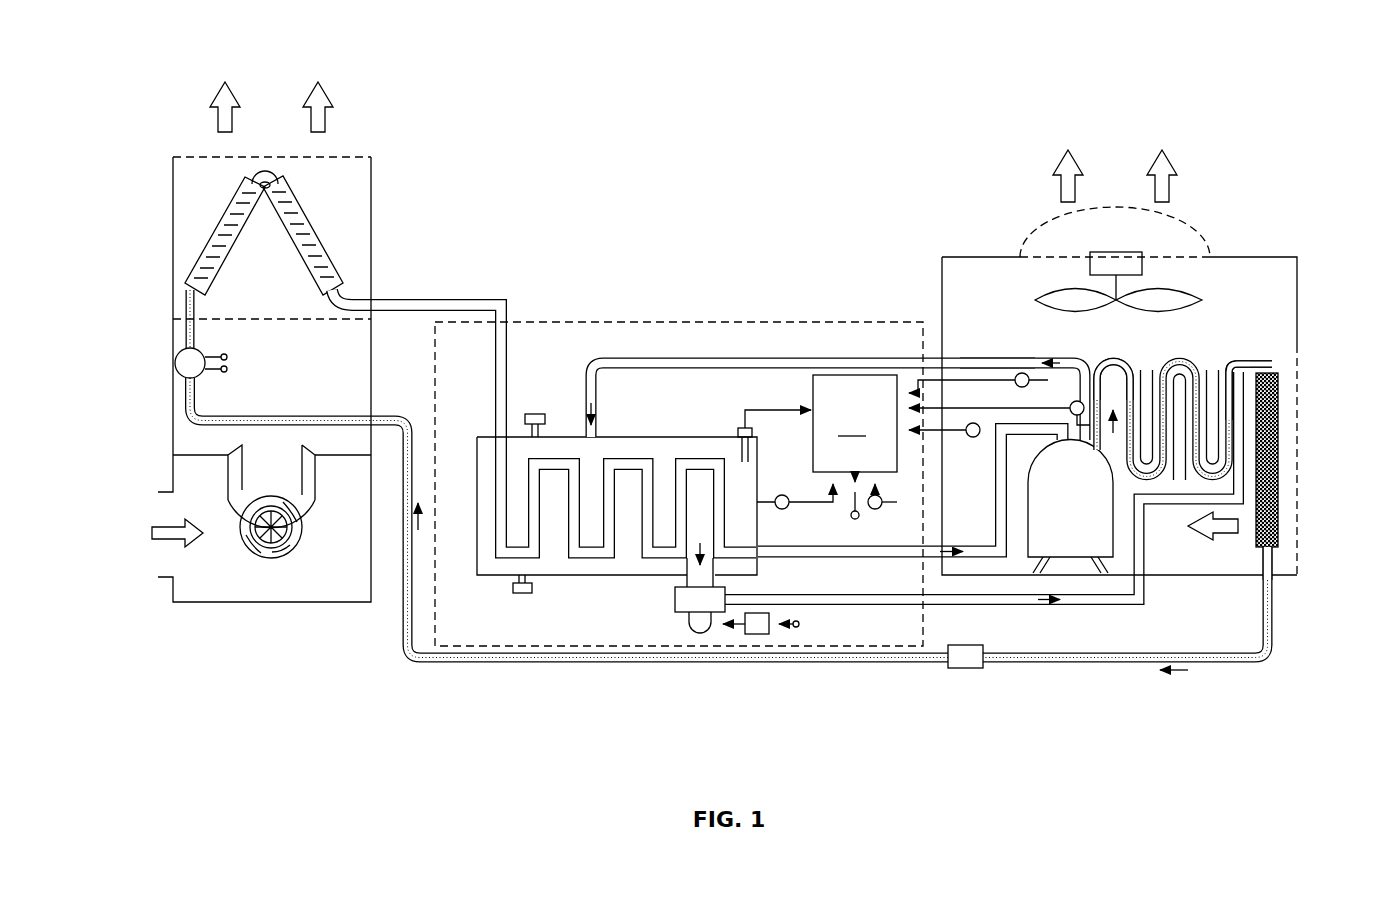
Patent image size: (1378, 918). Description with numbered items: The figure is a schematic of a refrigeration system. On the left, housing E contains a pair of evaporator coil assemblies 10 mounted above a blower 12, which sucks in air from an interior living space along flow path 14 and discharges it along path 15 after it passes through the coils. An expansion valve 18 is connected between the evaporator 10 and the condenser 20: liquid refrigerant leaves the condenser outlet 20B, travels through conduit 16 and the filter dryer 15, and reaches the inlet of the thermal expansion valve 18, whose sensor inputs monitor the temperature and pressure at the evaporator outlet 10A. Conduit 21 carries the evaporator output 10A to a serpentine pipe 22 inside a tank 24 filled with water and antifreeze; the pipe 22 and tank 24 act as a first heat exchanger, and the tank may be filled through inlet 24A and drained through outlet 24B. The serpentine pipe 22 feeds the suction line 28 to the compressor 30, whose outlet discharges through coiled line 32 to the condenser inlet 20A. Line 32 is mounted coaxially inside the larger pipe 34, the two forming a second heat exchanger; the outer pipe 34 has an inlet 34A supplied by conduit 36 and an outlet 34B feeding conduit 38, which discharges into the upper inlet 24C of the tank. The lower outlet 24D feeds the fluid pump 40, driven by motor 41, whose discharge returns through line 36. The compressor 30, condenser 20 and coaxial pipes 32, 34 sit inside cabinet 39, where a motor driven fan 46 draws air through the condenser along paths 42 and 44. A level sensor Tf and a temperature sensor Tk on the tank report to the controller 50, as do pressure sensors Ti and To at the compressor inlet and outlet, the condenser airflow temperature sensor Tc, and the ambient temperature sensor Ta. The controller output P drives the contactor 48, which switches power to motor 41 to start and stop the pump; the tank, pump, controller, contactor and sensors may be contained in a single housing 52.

The evaporator coil assemblies 10 is at (220, 275).
The outlet of the evaporator 10A is at (350, 289).
The blower 12 is at (297, 545).
The flow path 14 is at (190, 541).
The filter dryer 15 is at (220, 84).
The conduit 16 is at (573, 663).
The thermal expansion valve 18 is at (200, 350).
The condenser 20 is at (1279, 393).
The inlet of the condenser 20A is at (1265, 368).
The outlet of the condenser 20B is at (1273, 552).
The conduit 21 is at (432, 299).
The serpentine pipe 22 is at (583, 560).
The tank 24 is at (476, 463).
The inlet 24A is at (537, 413).
The outlet 24B is at (518, 595).
The upper inlet 24C is at (600, 425).
The lower outlet 24D is at (683, 578).
The suction line 28 is at (992, 541).
The compressor 30 is at (1056, 512).
The coiled line 32 is at (1183, 356).
The outer pipe 34 is at (1172, 356).
The inlet of the outer pipe 34A is at (1237, 358).
The outlet of the outer pipe 34B is at (1125, 357).
The line 36 is at (1146, 588).
The conduit 38 is at (1005, 357).
The cabinet 39 is at (990, 257).
The fluid pump 40 is at (673, 608).
The motor 41 is at (700, 634).
The air path 42 is at (1226, 541).
The air path 44 is at (1062, 152).
The motor driven fan 46 is at (1030, 290).
The contactor 48 is at (756, 635).
The controller 50 is at (855, 447).
The housing 52 is at (695, 321).
The housing E is at (372, 206).
The output P is at (804, 625).
The sensor Tf is at (740, 428).
The sensor Tk is at (787, 508).
The sensor Ta is at (878, 508).
The sensor Tc is at (1015, 384).
The sensor Ti is at (972, 437).
The sensor To is at (1076, 400).